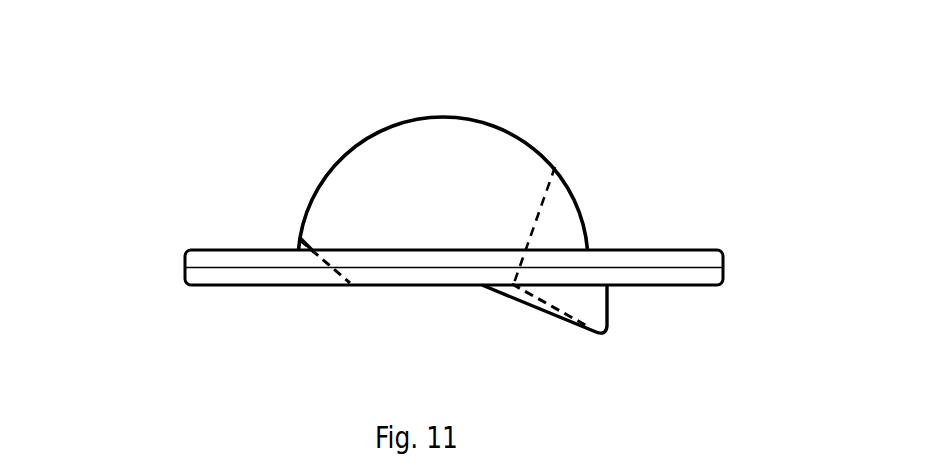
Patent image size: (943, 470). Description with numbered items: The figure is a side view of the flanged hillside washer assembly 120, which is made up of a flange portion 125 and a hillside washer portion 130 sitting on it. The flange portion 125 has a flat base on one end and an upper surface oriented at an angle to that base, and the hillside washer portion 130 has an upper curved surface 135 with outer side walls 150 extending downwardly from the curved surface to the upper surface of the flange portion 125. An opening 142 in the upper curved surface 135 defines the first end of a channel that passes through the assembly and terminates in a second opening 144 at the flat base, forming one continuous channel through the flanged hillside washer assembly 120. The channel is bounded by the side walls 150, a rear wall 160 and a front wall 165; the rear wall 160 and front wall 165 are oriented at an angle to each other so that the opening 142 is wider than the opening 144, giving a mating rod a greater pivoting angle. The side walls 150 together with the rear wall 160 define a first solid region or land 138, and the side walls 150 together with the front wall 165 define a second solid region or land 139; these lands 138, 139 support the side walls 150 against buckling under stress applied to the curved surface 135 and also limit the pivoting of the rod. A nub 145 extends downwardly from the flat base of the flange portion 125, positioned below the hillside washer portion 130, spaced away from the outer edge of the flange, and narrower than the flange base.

The flanged hillside washer assembly 120 is at (150, 139).
The flange portion 125 is at (722, 251).
The hillside washer portion 130 is at (380, 197).
The upper curved surface 135 is at (498, 126).
The first solid region or land 138 is at (550, 233).
The second solid region or land 139 is at (295, 247).
The opening 142 is at (390, 162).
The second opening 144 is at (423, 285).
The nub 145 is at (590, 322).
The side walls 150 is at (438, 127).
The rear wall 160 is at (540, 215).
The front wall 165 is at (320, 252).